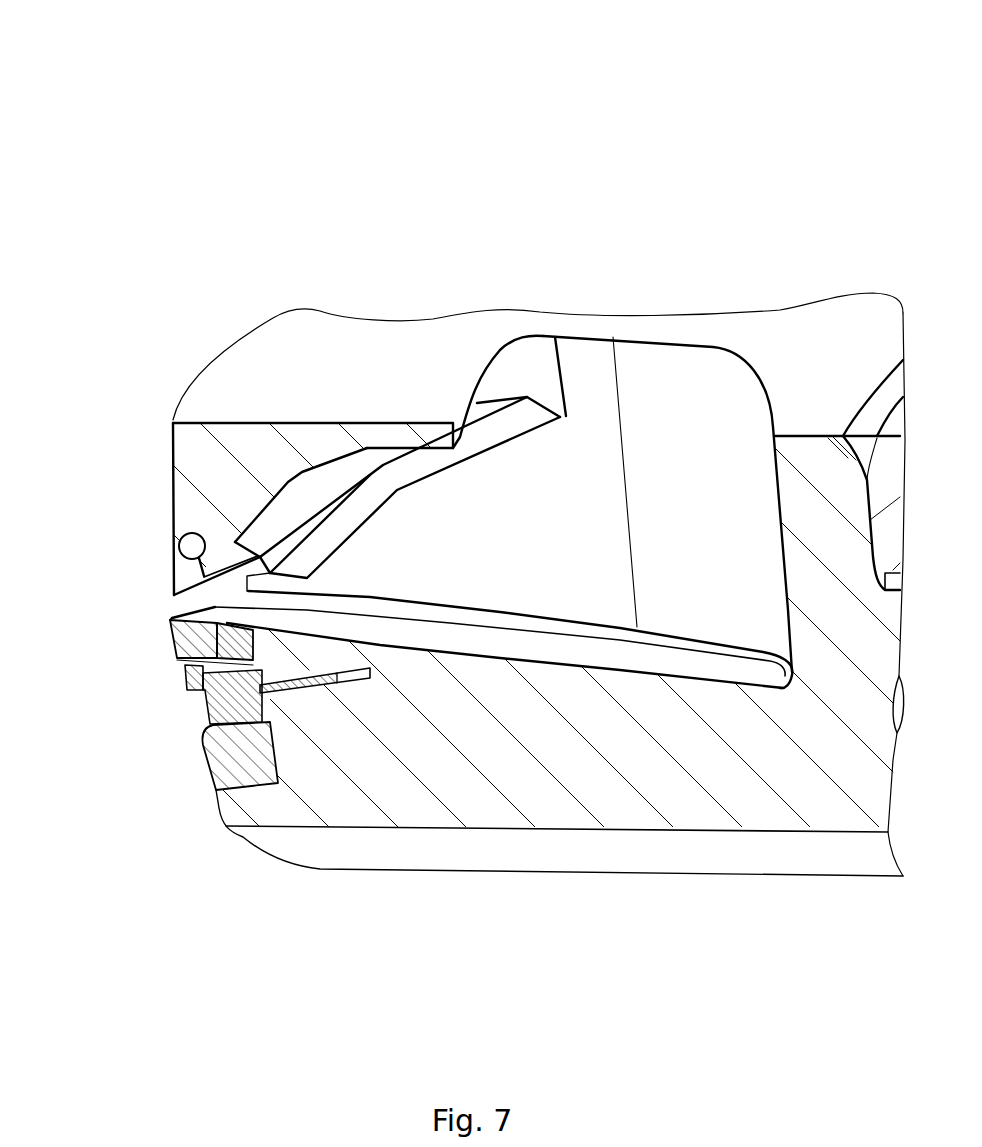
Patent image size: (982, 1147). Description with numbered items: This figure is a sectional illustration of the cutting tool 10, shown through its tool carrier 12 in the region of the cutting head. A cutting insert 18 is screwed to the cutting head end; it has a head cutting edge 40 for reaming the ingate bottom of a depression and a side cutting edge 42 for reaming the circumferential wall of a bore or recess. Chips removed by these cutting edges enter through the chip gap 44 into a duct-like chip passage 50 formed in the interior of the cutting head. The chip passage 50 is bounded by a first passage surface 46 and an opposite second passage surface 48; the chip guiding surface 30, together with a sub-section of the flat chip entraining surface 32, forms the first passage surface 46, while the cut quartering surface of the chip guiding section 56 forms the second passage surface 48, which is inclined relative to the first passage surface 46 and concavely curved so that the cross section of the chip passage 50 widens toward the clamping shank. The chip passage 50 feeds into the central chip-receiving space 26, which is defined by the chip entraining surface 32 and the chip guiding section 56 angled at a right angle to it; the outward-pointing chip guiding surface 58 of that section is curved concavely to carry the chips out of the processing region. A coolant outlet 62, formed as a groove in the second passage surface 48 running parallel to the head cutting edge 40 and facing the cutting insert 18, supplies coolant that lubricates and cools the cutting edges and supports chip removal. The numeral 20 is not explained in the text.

The cutting tool 10 is at (778, 182).
The tool carrier 12 is at (421, 244).
The cutting insert 18 is at (151, 739).
The latch element 20 is at (177, 637).
The chip-receiving space 26 is at (646, 364).
The chip guiding surface 30 is at (236, 612).
The chip entraining surface 32 is at (520, 641).
The head cutting edge 40 is at (232, 594).
The side cutting edge 42 is at (175, 648).
The chip gap 44 is at (297, 567).
The first passage surface 46 is at (352, 602).
The second passage surface 48 is at (302, 487).
The chip passage 50 is at (452, 508).
The chip guiding section 56 is at (320, 385).
The chip guiding surface 58 is at (580, 478).
The coolant outlet 62 is at (232, 553).